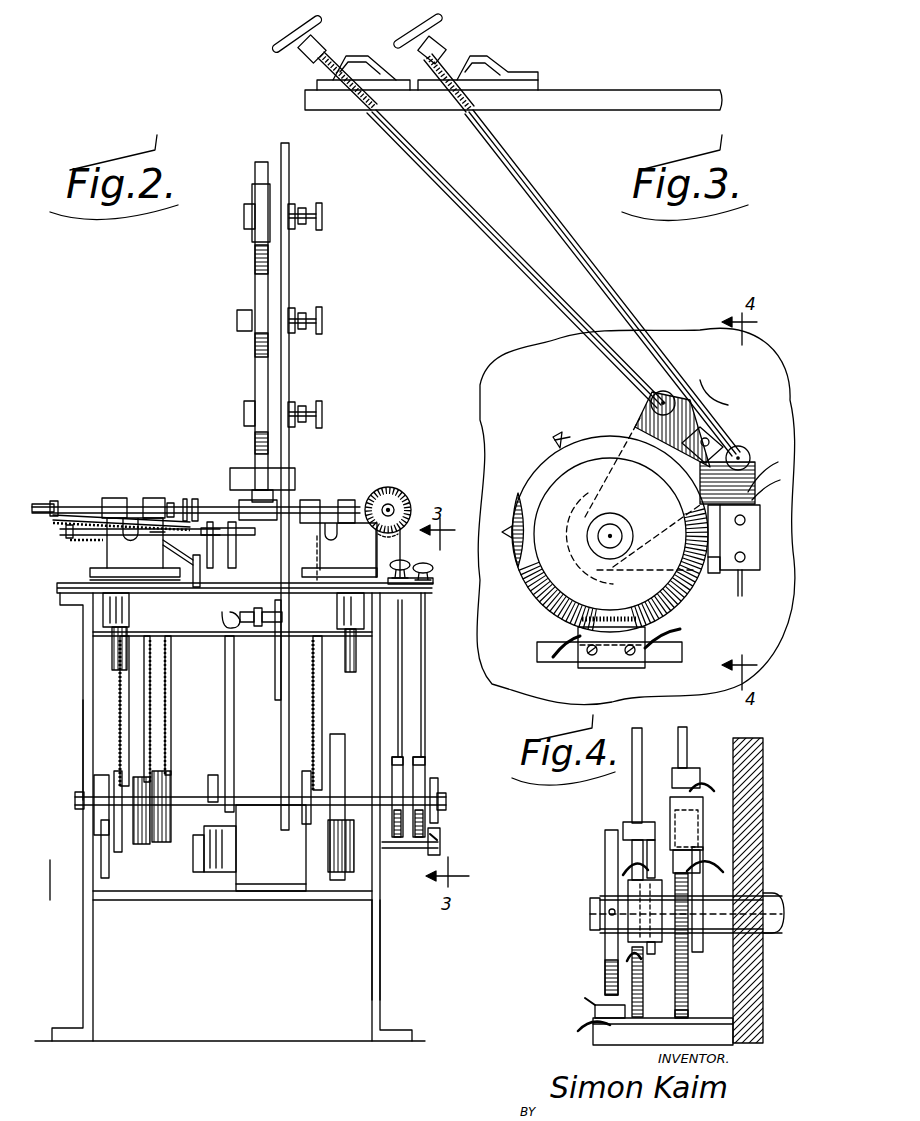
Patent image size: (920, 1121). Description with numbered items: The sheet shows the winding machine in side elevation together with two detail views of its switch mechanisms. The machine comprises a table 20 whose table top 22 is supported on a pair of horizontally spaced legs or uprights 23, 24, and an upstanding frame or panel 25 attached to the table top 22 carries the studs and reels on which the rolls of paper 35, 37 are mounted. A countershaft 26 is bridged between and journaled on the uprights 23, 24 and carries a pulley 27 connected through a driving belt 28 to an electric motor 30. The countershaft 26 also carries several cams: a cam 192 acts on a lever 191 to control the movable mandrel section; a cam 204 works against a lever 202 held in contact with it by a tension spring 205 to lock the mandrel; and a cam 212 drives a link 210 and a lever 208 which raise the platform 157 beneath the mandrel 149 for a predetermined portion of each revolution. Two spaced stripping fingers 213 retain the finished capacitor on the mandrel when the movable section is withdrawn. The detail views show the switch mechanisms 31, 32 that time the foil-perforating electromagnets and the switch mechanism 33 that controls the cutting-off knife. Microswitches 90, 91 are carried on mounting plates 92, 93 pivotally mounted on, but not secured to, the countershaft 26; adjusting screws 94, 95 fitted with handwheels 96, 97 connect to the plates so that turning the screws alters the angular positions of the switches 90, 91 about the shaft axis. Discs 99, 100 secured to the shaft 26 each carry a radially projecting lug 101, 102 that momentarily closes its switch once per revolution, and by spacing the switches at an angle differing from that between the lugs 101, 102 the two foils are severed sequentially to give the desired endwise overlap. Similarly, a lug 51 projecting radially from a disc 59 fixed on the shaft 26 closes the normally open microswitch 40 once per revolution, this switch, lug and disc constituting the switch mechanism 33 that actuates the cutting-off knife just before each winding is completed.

In FIG. 2, the table 20 is at (75, 864).
In FIG. 2, the table top 22 is at (59, 590).
In FIG. 3, the table top 22 is at (621, 97).
In FIG. 2, the leg or upright 23 is at (83, 743).
In FIG. 2, the leg or upright 24 is at (378, 938).
In FIG. 2, the upstanding frame or panel 25 is at (289, 283).
In FIG. 2, the countershaft 26 is at (444, 802).
In FIG. 3, the countershaft 26 is at (597, 534).
In FIG. 4, the countershaft 26 is at (593, 918).
In FIG. 2, the pulley 27 is at (341, 748).
In FIG. 2, the driving belt 28 is at (339, 873).
In FIG. 2, the electric motor 30 is at (227, 883).
In FIG. 2, the switch mechanism 31 is at (424, 772).
In FIG. 3, the switch mechanism 31 is at (562, 437).
In FIG. 4, the switch mechanism 31 is at (633, 972).
In FIG. 2, the switch mechanism 32 is at (404, 756).
In FIG. 3, the switch mechanism 32 is at (553, 440).
In FIG. 4, the switch mechanism 32 is at (695, 977).
In FIG. 2, the switch mechanism 33 is at (450, 777).
In FIG. 4, the switch mechanism 33 is at (598, 857).
In FIG. 2, the roll of paper 35 is at (263, 381).
In FIG. 2, the roll of paper 37 is at (259, 176).
In FIG. 2, the microswitch 40 is at (437, 843).
In FIG. 3, the microswitch 40 is at (620, 661).
In FIG. 4, the microswitch 40 is at (595, 1011).
In FIG. 3, the lug 51 is at (692, 560).
In FIG. 3, the disc 59 is at (620, 604).
In FIG. 4, the disc 59 is at (607, 959).
In FIG. 3, the microswitch 90 is at (752, 527).
In FIG. 4, the microswitch 90 is at (633, 888).
In FIG. 3, the microswitch 91 is at (734, 432).
In FIG. 4, the microswitch 91 is at (711, 801).
In FIG. 3, the mounting plate 92 is at (740, 539).
In FIG. 4, the mounting plate 92 is at (652, 954).
In FIG. 3, the mounting plate 93 is at (657, 447).
In FIG. 4, the mounting plate 93 is at (693, 952).
In FIG. 2, the adjusting screw 94 is at (403, 680).
In FIG. 3, the adjusting screw 94 is at (600, 286).
In FIG. 4, the adjusting screw 94 is at (685, 739).
In FIG. 2, the adjusting screw 95 is at (427, 651).
In FIG. 3, the adjusting screw 95 is at (563, 303).
In FIG. 4, the adjusting screw 95 is at (632, 769).
In FIG. 2, the handwheel 96 is at (399, 556).
In FIG. 3, the handwheel 96 is at (413, 45).
In FIG. 2, the handwheel 97 is at (433, 571).
In FIG. 3, the handwheel 97 is at (289, 41).
In FIG. 3, the disc 99 is at (545, 621).
In FIG. 4, the disc 99 is at (638, 1031).
In FIG. 3, the disc 100 is at (519, 494).
In FIG. 4, the disc 100 is at (678, 1020).
In FIG. 3, the lug 101 is at (552, 447).
In FIG. 3, the lug 102 is at (505, 520).
In FIG. 2, the mandrel 149 is at (214, 506).
In FIG. 2, the platform 157 is at (207, 584).
In FIG. 2, the lever 191 is at (103, 877).
In FIG. 2, the cam 192 is at (99, 826).
In FIG. 2, the lever 202 is at (311, 854).
In FIG. 2, the cam 204 is at (313, 810).
In FIG. 2, the tension spring 205 is at (320, 677).
In FIG. 2, the lever 208 is at (223, 628).
In FIG. 2, the link 210 is at (226, 686).
In FIG. 2, the cam 212 is at (214, 781).
In FIG. 2, the stripping fingers 213 is at (231, 546).